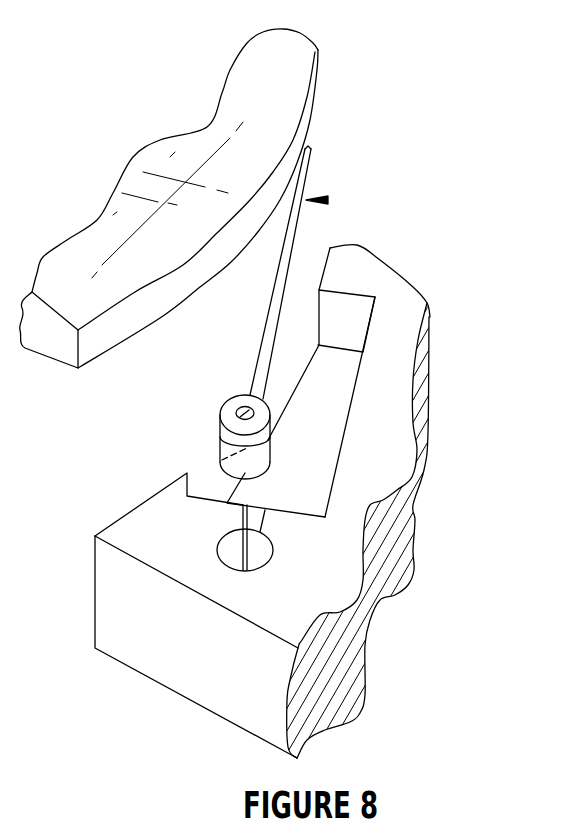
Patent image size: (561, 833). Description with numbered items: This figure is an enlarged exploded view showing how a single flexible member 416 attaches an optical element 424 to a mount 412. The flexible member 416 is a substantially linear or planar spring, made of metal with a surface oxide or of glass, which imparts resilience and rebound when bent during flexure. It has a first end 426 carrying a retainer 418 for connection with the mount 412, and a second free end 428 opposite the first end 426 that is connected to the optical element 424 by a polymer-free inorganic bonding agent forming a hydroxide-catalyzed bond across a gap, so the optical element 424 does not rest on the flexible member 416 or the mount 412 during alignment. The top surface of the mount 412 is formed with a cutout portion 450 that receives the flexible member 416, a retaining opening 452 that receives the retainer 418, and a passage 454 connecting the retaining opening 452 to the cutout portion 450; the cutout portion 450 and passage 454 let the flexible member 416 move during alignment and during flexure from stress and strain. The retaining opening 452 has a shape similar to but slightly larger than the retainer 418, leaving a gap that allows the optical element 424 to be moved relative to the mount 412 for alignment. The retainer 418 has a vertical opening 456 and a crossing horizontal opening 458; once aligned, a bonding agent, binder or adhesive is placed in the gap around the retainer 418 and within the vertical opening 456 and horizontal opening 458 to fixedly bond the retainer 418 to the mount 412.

The mount 412 is at (402, 305).
The flexible member 416 is at (326, 200).
The retainer 418 is at (253, 460).
The optical element 424 is at (247, 78).
The first end 426 is at (252, 393).
The second free end 428 is at (312, 153).
The cutout portion 450 is at (337, 378).
The retaining opening 452 is at (233, 550).
The passage 454 is at (253, 522).
The vertical opening 456 is at (240, 412).
The horizontal opening 458 is at (222, 462).